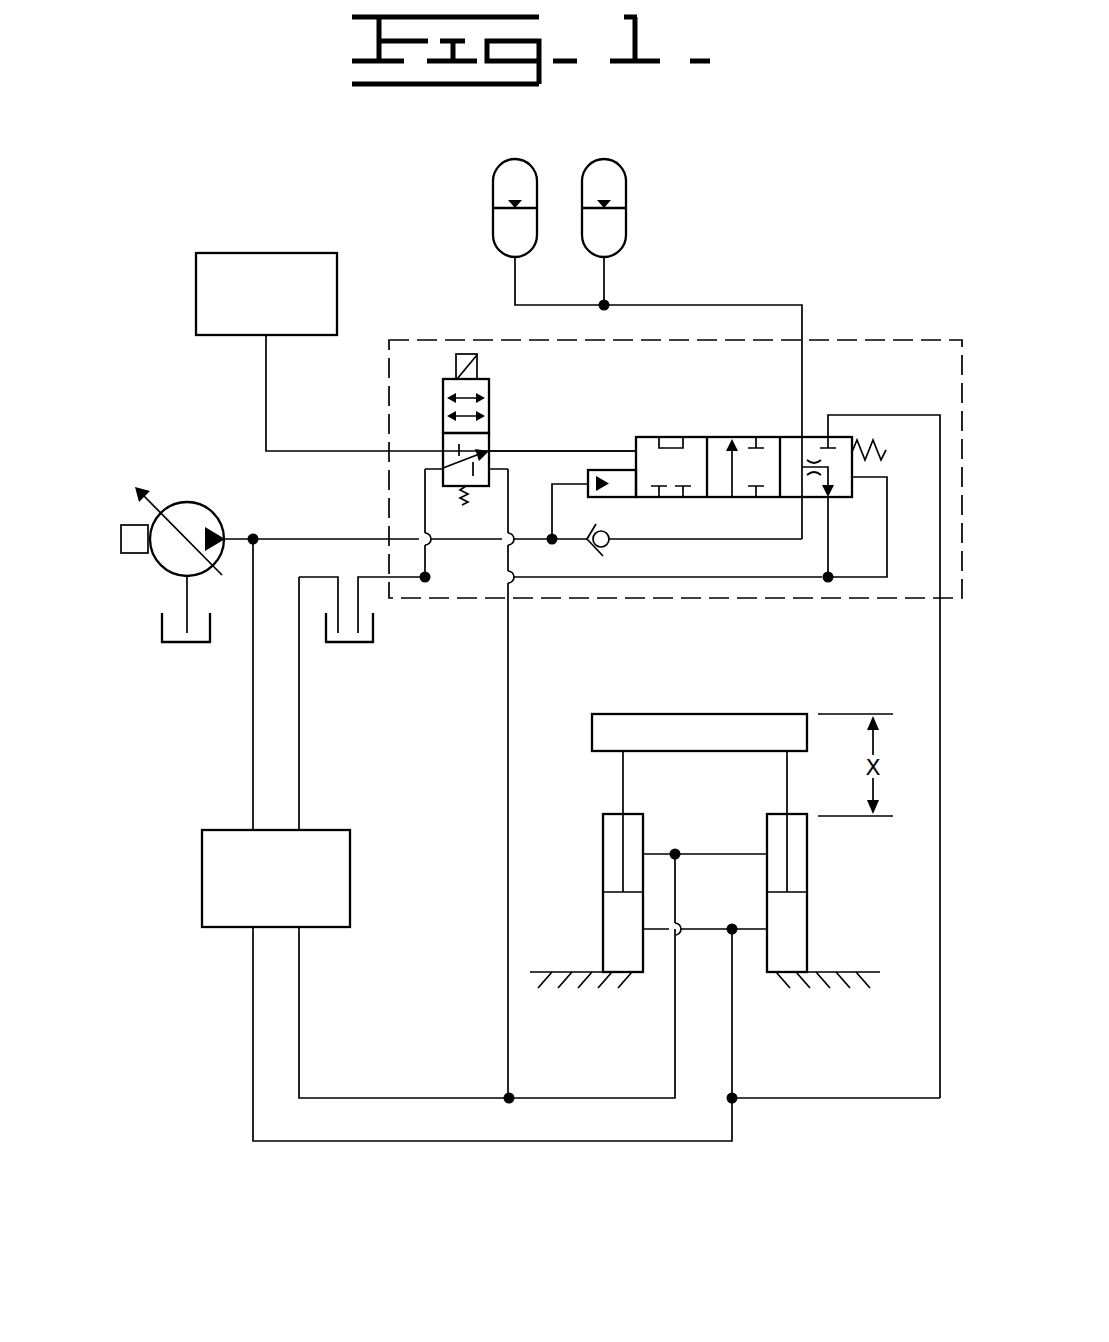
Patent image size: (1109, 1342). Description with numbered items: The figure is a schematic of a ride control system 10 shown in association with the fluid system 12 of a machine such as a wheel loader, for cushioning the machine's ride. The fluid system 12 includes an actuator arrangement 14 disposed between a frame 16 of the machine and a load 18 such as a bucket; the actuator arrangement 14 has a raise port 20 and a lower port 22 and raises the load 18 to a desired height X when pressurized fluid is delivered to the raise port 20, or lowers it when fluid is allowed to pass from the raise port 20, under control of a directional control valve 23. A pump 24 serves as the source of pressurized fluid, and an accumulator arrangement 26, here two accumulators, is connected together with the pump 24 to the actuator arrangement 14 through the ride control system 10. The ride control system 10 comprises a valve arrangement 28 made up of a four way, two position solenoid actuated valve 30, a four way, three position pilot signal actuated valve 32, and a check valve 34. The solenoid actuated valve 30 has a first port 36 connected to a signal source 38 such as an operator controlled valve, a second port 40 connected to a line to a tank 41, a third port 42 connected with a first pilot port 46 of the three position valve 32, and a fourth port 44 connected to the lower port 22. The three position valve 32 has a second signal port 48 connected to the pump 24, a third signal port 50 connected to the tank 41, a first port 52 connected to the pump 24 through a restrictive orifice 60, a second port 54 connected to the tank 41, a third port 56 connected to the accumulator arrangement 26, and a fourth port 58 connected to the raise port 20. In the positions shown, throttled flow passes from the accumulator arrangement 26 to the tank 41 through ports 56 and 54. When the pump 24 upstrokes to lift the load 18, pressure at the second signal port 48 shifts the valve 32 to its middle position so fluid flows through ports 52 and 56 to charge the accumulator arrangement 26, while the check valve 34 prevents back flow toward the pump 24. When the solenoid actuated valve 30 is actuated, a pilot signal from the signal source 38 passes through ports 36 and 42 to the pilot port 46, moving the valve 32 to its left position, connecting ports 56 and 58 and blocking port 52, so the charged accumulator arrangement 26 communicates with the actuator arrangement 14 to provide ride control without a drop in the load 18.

The ride control system 10 is at (955, 600).
The fluid system 12 is at (865, 1140).
The actuator arrangement 14 is at (816, 907).
The frame 16 is at (858, 970).
The load 18 is at (747, 713).
The raise port 20 is at (747, 927).
The lower port 22 is at (709, 853).
The directional control valve 23 is at (333, 830).
The pump 24 is at (206, 504).
The accumulator arrangement 26 is at (623, 164).
The valve arrangement 28 is at (727, 728).
The solenoid actuated valve 30 is at (480, 373).
The pilot signal actuated valve 32 is at (858, 490).
The check valve 34 is at (612, 553).
The first port 36 is at (477, 454).
The signal source 38 is at (291, 253).
The second port 40 is at (427, 510).
The tank 41 is at (162, 632).
The third port 42 is at (488, 457).
The fourth port 44 is at (490, 465).
The first pilot port 46 is at (607, 450).
The second signal port 48 is at (607, 498).
The third signal port 50 is at (903, 522).
The first port 52 is at (802, 499).
The second port 54 is at (828, 502).
The third port 56 is at (802, 437).
The fourth port 58 is at (822, 434).
The restrictive orifice 60 is at (652, 535).